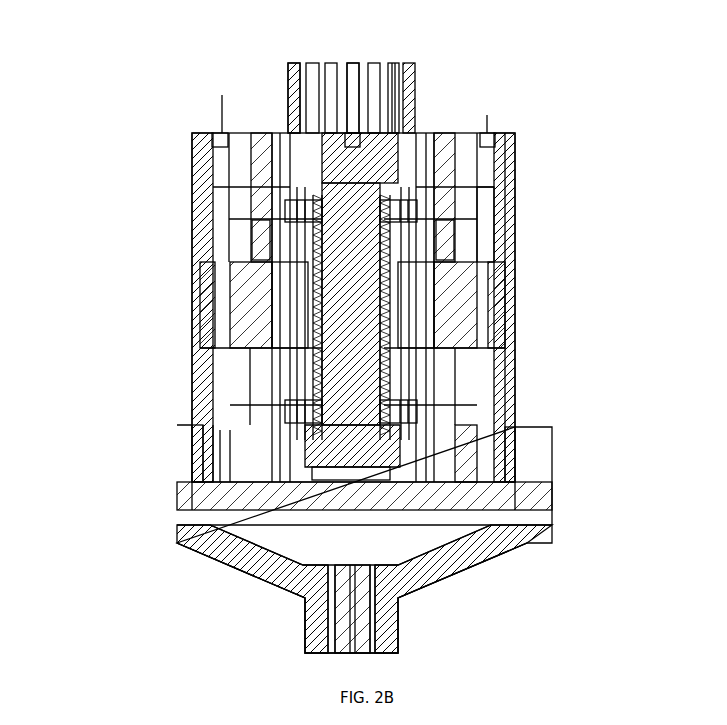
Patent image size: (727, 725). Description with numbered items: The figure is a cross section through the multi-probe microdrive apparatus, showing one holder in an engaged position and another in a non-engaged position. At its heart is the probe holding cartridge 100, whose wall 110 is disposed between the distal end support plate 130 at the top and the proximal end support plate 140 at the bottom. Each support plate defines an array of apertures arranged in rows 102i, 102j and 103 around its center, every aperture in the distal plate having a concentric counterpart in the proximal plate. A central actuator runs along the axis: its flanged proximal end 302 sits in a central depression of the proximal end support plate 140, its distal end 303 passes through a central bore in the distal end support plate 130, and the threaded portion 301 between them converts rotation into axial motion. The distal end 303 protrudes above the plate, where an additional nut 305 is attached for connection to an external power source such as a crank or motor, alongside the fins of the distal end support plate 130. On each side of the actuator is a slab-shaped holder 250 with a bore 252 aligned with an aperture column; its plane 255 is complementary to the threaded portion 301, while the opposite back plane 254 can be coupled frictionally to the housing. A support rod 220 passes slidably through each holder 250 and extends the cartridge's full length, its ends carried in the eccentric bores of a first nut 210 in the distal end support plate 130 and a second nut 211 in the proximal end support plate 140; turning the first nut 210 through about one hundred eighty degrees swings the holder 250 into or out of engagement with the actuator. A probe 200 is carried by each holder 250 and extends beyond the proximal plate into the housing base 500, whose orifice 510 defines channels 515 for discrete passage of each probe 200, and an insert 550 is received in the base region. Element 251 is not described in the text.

The probe holding cartridge 100 is at (505, 297).
The aperture row 102i is at (220, 95).
The aperture row 102j is at (490, 115).
The aperture row 103 is at (297, 63).
The wall 110 is at (505, 220).
The distal end support plate 130 is at (440, 150).
The proximal end support plate 140 is at (258, 448).
The probe 200 is at (318, 378).
The first nut 210 is at (205, 160).
The second nut 211 is at (205, 523).
The support rod 220 is at (490, 195).
The holder 250 is at (258, 240).
The inner block 251 is at (268, 275).
The bore 252 is at (292, 312).
The back plane 254 is at (205, 328).
The plane 255 is at (390, 290).
The threaded portion 301 is at (388, 250).
The flanged proximal end 302 is at (358, 448).
The distal end 303 is at (372, 163).
The additional nut 305 is at (358, 63).
The housing base 500 is at (237, 553).
The orifice 510 is at (383, 635).
The channel 515 is at (325, 608).
The insert 550 is at (375, 545).